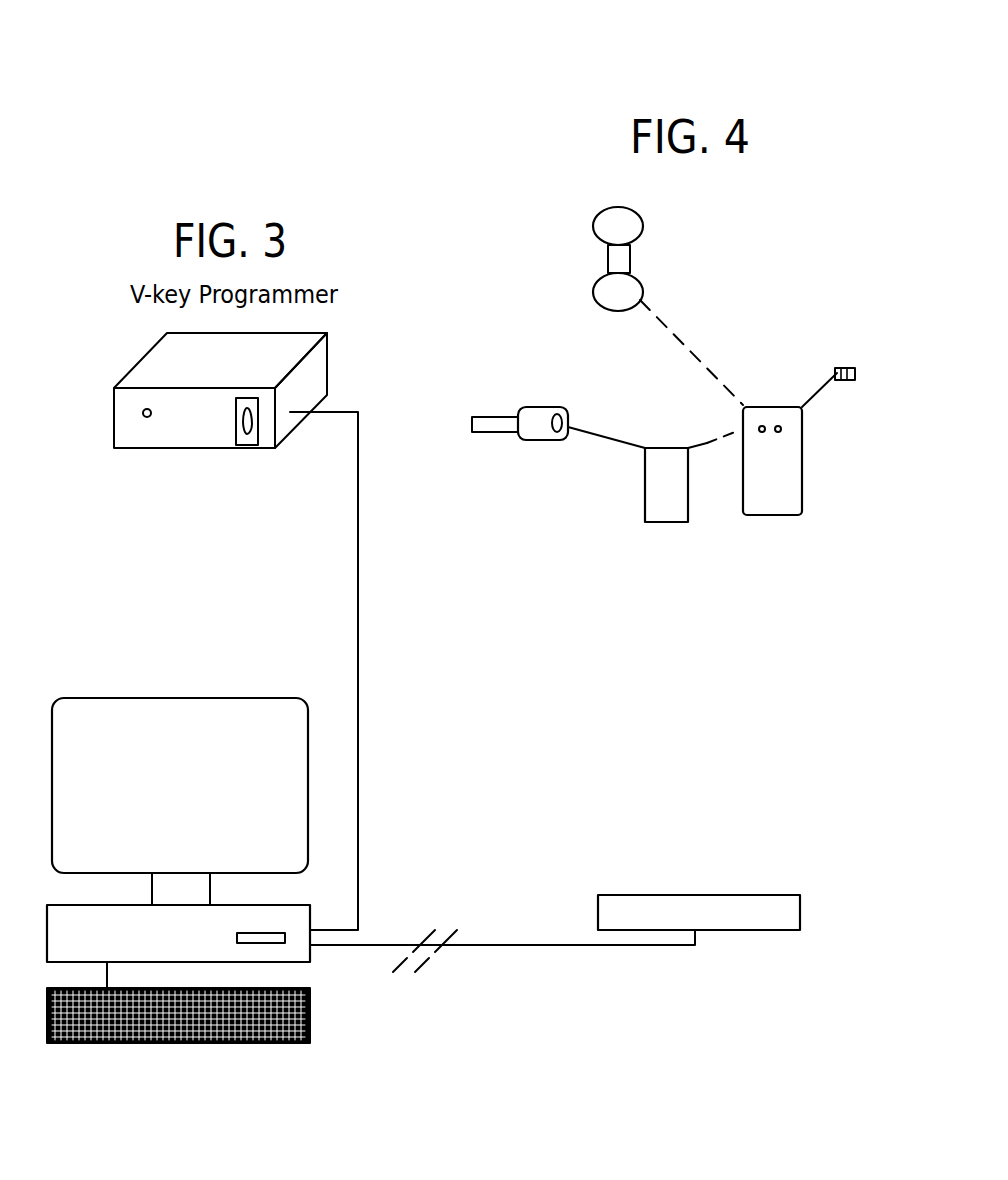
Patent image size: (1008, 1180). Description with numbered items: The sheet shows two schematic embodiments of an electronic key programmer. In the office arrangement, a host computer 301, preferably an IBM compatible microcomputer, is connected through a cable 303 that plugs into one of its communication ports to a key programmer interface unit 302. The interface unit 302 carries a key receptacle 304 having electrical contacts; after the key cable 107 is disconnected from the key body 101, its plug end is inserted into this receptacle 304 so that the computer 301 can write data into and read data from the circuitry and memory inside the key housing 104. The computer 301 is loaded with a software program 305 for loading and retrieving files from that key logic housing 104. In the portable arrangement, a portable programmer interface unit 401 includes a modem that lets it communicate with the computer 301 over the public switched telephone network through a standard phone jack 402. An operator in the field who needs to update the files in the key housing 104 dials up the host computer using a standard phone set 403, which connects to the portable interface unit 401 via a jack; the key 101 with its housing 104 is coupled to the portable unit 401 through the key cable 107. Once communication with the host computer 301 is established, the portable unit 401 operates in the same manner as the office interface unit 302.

In FIG. 3, the host computer 301 is at (148, 698).
In FIG. 3, the key programmer interface unit 302 is at (130, 370).
In FIG. 3, the cable 303 is at (358, 602).
In FIG. 3, the key receptacle 304 is at (240, 440).
In FIG. 3, the software program 305 is at (798, 895).
In FIG. 4, the key body 101 is at (537, 405).
In FIG. 4, the key housing 104 is at (647, 522).
In FIG. 4, the key cable 107 is at (703, 442).
In FIG. 4, the portable programmer interface unit 401 is at (772, 515).
In FIG. 4, the phone jack 402 is at (850, 363).
In FIG. 4, the phone set 403 is at (632, 208).